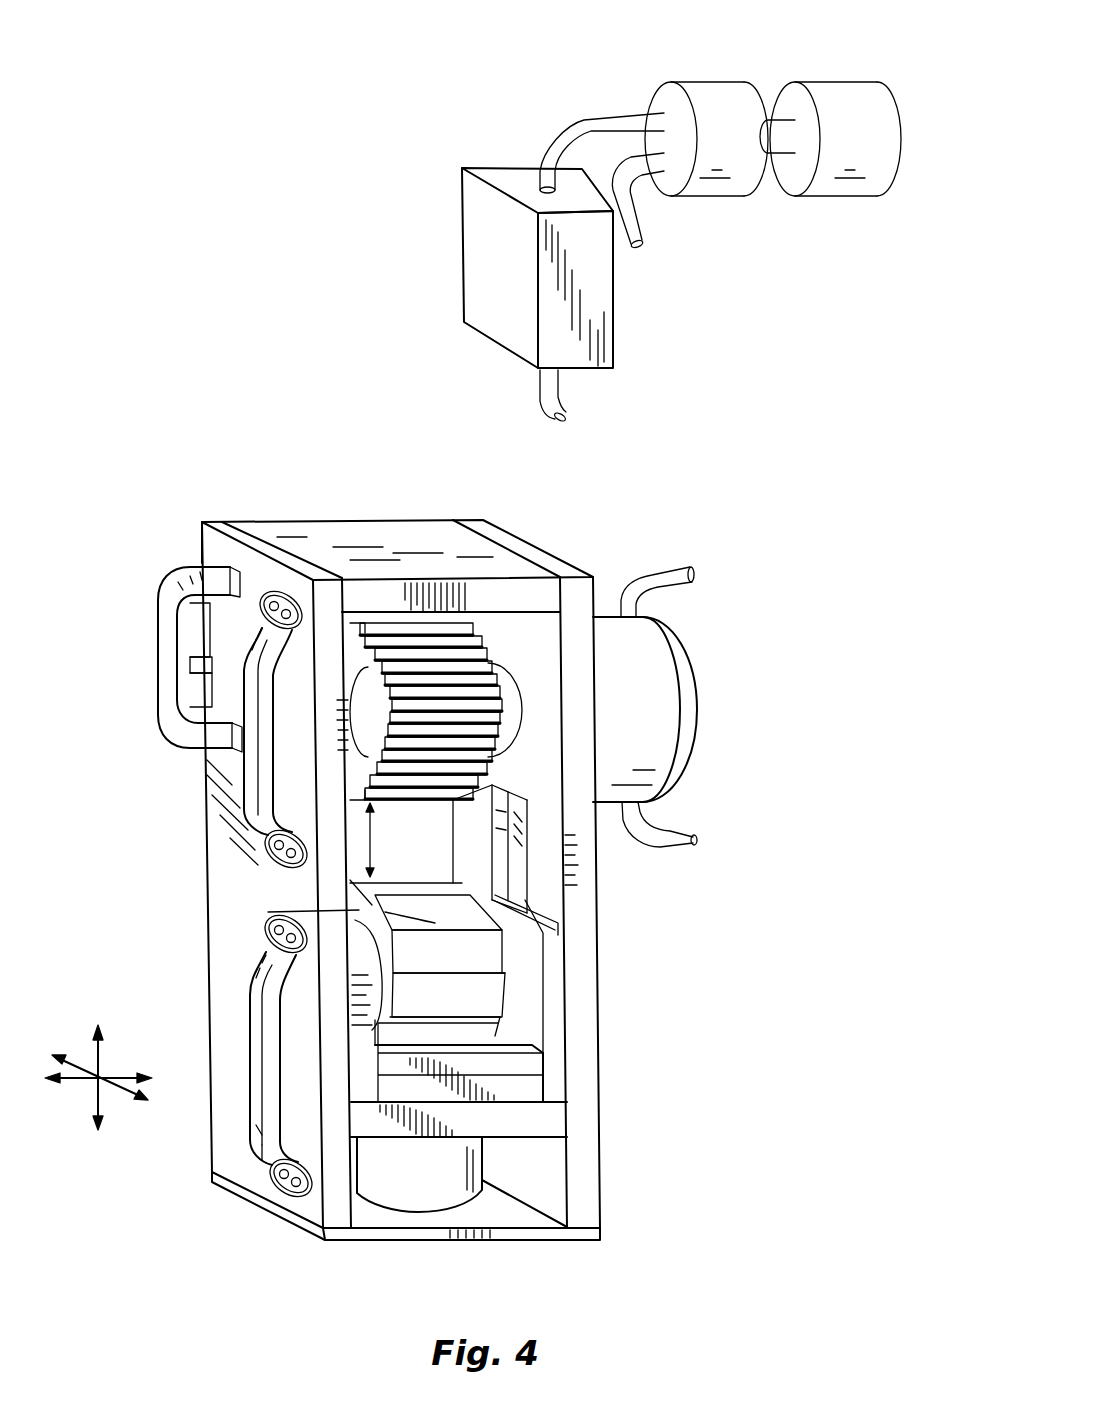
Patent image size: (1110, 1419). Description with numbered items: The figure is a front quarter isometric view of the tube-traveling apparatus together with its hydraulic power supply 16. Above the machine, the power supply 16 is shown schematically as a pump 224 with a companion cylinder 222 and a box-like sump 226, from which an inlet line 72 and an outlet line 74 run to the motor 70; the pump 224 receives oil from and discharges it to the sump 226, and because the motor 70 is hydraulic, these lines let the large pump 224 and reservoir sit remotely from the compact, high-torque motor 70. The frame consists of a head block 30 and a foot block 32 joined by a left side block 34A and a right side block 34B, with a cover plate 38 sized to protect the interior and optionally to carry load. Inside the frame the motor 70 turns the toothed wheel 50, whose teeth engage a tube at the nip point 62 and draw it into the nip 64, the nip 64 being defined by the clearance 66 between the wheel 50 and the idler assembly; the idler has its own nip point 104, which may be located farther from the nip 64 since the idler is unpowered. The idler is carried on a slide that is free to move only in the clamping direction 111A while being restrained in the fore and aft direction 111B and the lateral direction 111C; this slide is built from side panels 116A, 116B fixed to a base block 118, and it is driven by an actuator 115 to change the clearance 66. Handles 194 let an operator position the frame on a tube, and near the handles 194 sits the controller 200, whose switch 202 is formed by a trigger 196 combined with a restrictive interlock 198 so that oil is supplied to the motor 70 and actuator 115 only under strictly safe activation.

The power supply 16 is at (544, 86).
The pump 224 is at (693, 89).
The second cylinder 222 is at (839, 98).
The sump 226 is at (478, 215).
The inlet line 72 is at (646, 226).
The outlet line 74 is at (566, 408).
The head block 30 is at (380, 533).
The left side block 34A is at (503, 537).
The right side block 34B is at (223, 528).
The cover plate 38 is at (533, 1240).
The wheel 50 is at (457, 663).
The nip point 62 is at (408, 755).
The nip 64 is at (422, 853).
The clearance 66 is at (359, 843).
The motor 70 is at (660, 718).
The nip point 104 is at (268, 912).
The clamping direction 111A is at (97, 1120).
The fore and aft direction 111B is at (77, 1070).
The lateral direction 111C is at (123, 1077).
The actuator 115 is at (443, 1168).
The side panel 116A is at (560, 1008).
The side panel 116B is at (283, 1180).
The base block 118 is at (533, 1088).
The foot block 32 is at (542, 1122).
The handles 194 is at (260, 720).
The trigger 196 is at (200, 628).
The interlock 198 is at (200, 687).
The controller 200 is at (150, 600).
The switch 202 is at (187, 647).